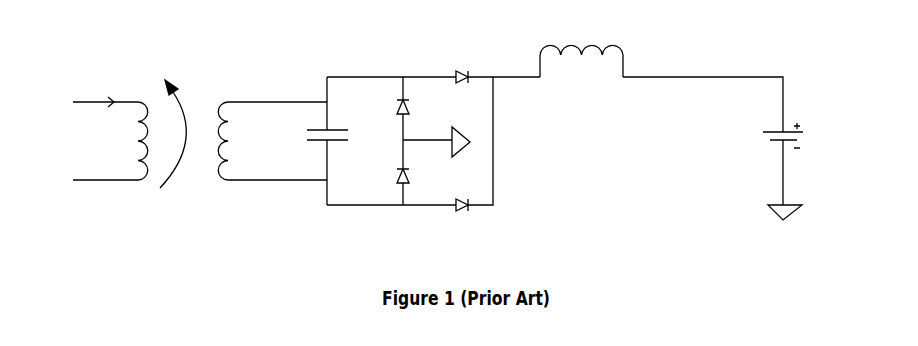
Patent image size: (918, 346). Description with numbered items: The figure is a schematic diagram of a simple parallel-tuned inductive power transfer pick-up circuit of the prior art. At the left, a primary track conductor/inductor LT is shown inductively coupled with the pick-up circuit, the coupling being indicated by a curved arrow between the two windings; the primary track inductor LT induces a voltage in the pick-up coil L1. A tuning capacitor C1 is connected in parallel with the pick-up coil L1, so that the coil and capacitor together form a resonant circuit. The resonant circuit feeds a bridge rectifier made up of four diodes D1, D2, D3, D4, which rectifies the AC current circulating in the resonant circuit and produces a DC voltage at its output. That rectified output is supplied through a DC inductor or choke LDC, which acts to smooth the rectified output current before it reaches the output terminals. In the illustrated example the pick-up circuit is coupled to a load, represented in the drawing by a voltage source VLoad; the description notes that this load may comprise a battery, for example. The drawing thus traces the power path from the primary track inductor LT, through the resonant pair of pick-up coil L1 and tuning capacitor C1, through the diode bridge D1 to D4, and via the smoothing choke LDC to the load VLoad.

The primary track conductor/inductor LT is at (129, 134).
The pick-up coil L1 is at (272, 141).
The tuning capacitor C1 is at (313, 141).
The diode D1 is at (463, 61).
The diode D2 is at (386, 110).
The diode D3 is at (386, 175).
The diode D4 is at (463, 226).
The DC inductor LDC is at (581, 45).
The load VLoad is at (808, 171).